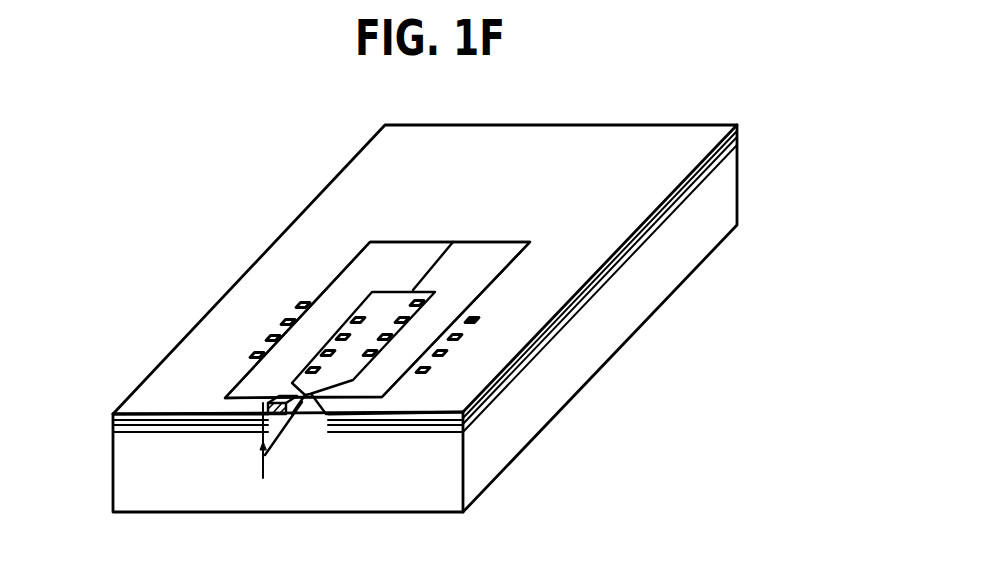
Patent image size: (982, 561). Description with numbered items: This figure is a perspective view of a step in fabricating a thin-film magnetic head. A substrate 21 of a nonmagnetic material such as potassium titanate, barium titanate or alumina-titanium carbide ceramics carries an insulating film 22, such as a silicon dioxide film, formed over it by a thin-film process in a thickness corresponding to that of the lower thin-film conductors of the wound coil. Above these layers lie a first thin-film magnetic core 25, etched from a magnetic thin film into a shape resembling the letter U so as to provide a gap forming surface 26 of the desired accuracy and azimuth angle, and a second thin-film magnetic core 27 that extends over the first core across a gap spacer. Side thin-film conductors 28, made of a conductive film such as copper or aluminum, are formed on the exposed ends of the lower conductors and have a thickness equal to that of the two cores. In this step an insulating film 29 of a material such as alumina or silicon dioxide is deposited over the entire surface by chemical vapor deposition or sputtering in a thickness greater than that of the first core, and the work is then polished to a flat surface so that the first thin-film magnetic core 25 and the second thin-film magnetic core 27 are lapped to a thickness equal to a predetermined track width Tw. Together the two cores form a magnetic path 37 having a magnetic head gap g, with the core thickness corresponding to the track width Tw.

The substrate 21 is at (528, 417).
The insulating film 22 is at (113, 434).
The first thin-film magnetic core 25 is at (403, 258).
The gap forming surface 26 is at (303, 390).
The second thin-film magnetic core 27 is at (485, 260).
The side thin-film conductors 28 is at (474, 320).
The insulating film 29 is at (113, 416).
The magnetic path 37 is at (543, 208).
The track width Tw is at (262, 450).
The magnetic head gap g is at (319, 412).